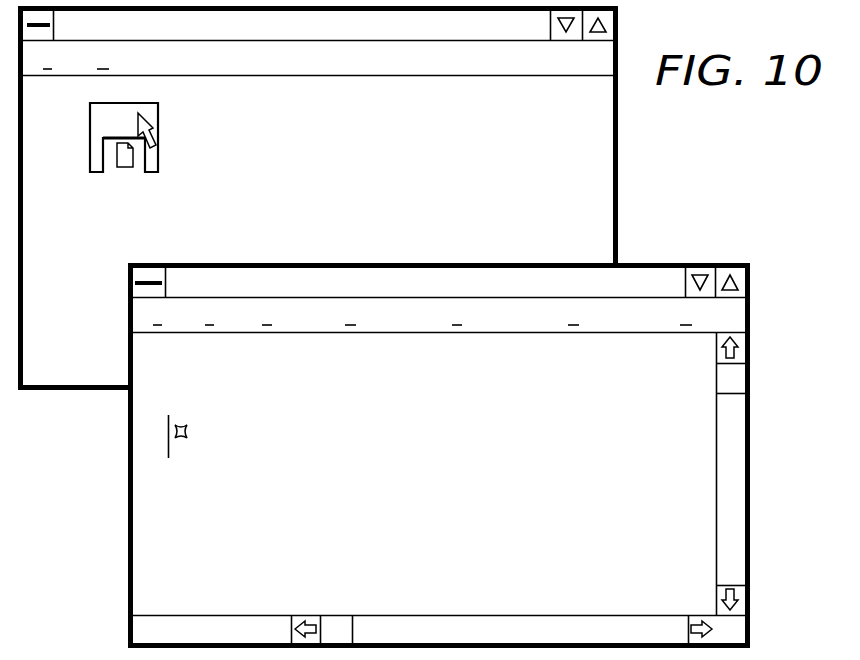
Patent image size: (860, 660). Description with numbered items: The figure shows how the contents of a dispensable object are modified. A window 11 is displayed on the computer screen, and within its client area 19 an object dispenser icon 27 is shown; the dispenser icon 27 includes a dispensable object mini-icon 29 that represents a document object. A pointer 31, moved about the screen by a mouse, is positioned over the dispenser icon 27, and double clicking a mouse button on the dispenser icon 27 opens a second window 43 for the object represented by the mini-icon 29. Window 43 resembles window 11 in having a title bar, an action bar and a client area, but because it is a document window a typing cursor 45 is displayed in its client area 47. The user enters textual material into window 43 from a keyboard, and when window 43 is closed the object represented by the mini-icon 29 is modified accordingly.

The window 11 is at (618, 145).
The client area 19 is at (546, 175).
The object dispenser icon 27 is at (158, 121).
The dispensable object mini-icon 29 is at (118, 157).
The pointer 31 is at (158, 138).
The window 43 is at (457, 263).
The typing cursor 45 is at (168, 450).
The client area 47 is at (436, 566).